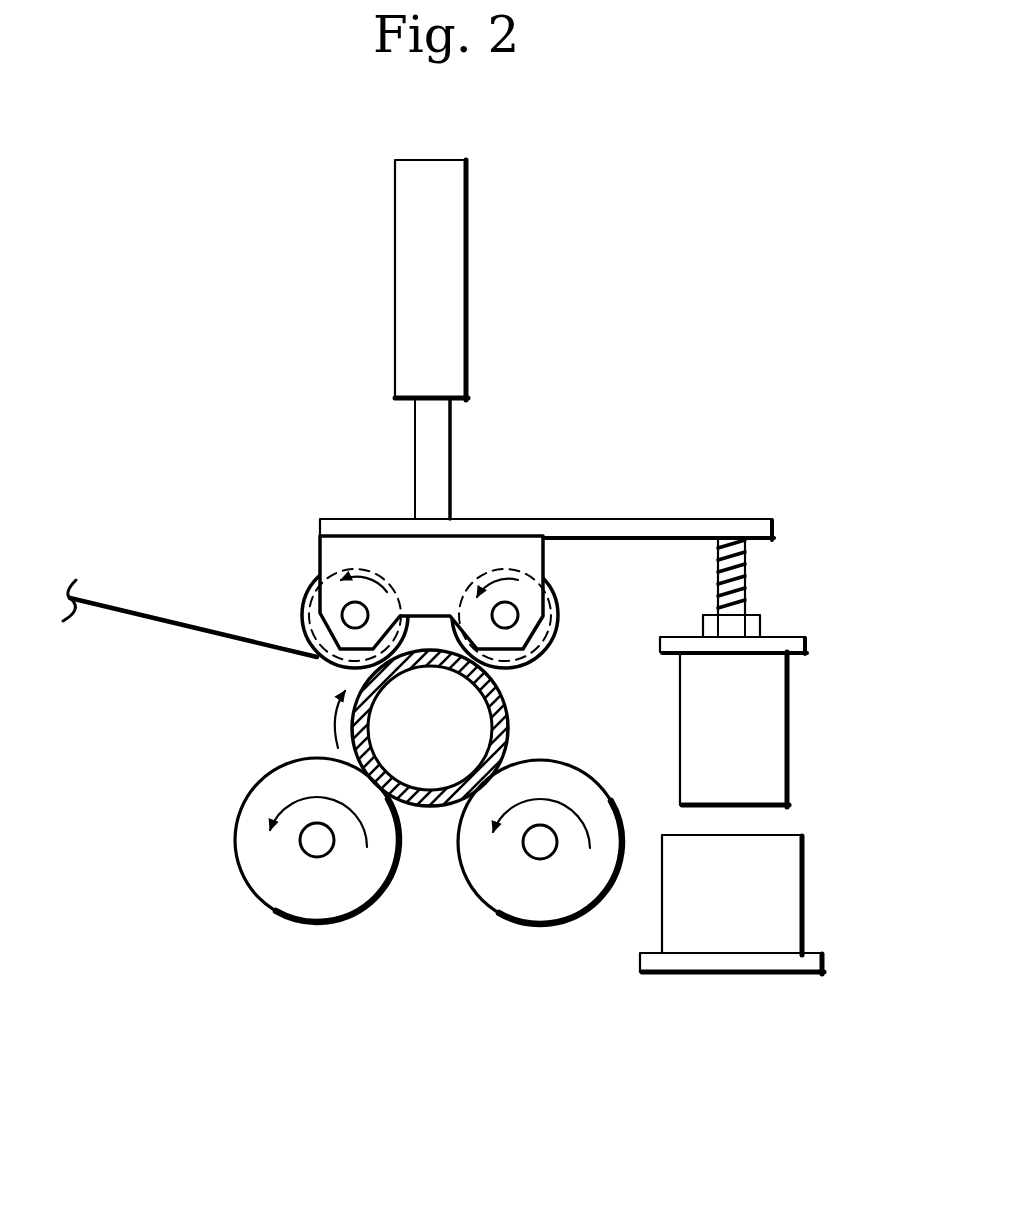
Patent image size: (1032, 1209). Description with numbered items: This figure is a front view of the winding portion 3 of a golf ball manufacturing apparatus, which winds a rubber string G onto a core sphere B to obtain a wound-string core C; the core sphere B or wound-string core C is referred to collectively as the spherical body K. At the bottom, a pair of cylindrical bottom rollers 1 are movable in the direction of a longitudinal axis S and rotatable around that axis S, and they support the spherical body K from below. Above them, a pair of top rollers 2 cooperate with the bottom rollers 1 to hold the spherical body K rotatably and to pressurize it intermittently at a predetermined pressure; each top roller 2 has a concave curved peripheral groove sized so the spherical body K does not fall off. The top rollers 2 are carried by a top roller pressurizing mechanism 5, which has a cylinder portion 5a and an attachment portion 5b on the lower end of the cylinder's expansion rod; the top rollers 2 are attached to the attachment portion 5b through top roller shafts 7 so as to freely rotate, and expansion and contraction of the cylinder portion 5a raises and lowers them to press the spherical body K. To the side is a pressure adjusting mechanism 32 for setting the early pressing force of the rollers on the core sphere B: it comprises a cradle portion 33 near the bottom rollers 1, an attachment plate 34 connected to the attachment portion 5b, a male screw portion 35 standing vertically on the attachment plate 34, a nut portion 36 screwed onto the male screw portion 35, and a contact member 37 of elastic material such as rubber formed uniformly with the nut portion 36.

The bottom roller 1 is at (310, 928).
The top roller 2 is at (308, 578).
The winding portion 3 is at (714, 353).
The top roller pressurizing mechanism 5 is at (487, 356).
The cylinder portion 5a is at (478, 270).
The attachment portion 5b is at (455, 552).
The top roller shaft 7 is at (352, 613).
The pressure adjusting mechanism 32 is at (789, 696).
The cradle portion 33 is at (793, 898).
The attachment plate 34 is at (644, 520).
The male screw portion 35 is at (748, 573).
The nut portion 36 is at (762, 627).
The contact member 37 is at (788, 733).
The core sphere B is at (446, 747).
The wound-string core C is at (515, 722).
The rubber string G is at (158, 613).
The spherical body K is at (427, 835).
The longitudinal axis S is at (317, 840).